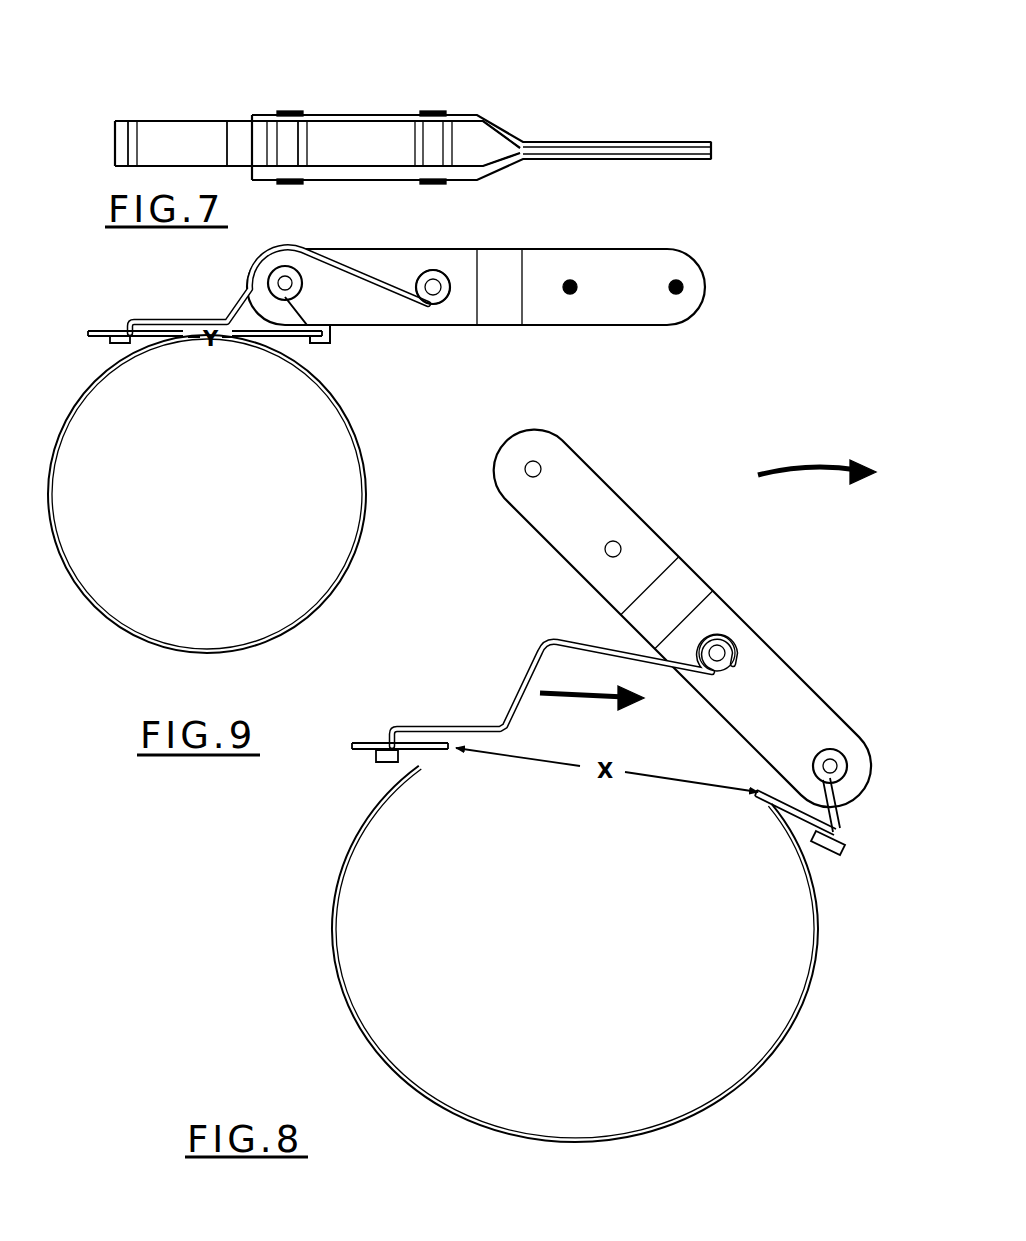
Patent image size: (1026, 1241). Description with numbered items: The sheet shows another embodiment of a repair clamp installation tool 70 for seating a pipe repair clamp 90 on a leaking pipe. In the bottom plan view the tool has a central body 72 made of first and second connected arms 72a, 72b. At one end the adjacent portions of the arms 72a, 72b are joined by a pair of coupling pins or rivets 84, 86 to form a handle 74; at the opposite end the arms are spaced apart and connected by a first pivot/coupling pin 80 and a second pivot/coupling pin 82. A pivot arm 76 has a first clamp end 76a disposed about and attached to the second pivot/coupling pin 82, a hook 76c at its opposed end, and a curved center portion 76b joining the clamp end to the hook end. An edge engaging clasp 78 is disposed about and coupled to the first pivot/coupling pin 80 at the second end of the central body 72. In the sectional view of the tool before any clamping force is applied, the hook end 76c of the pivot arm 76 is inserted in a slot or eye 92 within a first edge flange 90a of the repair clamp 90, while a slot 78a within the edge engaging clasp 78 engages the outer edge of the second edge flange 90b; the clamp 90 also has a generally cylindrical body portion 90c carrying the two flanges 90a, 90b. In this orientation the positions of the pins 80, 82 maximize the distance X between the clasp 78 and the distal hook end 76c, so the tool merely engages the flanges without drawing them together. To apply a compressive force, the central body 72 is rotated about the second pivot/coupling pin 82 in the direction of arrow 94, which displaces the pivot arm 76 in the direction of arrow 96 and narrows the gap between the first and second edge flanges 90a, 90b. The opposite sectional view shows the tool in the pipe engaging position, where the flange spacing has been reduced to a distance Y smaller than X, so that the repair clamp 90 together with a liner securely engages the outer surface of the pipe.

In FIG. 7, the repair clamp installation tool 70 is at (304, 84).
In FIG. 9, the repair clamp installation tool 70 is at (636, 336).
In FIG. 8, the repair clamp installation tool 70 is at (742, 560).
In FIG. 7, the central body 72 is at (404, 112).
In FIG. 9, the central body 72 is at (470, 328).
In FIG. 8, the central body 72 is at (826, 700).
In FIG. 7, the first arm 72a is at (386, 116).
In FIG. 9, the first arm 72a is at (418, 262).
In FIG. 7, the second arm 72b is at (380, 180).
In FIG. 8, the second arm 72b is at (796, 681).
In FIG. 7, the handle 74 is at (625, 142).
In FIG. 9, the handle 74 is at (640, 272).
In FIG. 8, the handle 74 is at (590, 486).
In FIG. 7, the pivot arm 76 is at (170, 118).
In FIG. 9, the pivot arm 76 is at (232, 300).
In FIG. 8, the pivot arm 76 is at (500, 676).
In FIG. 7, the first clamp end 76a is at (458, 147).
In FIG. 9, the first clamp end 76a is at (440, 274).
In FIG. 8, the first clamp end 76a is at (740, 640).
In FIG. 7, the curved center portion 76b is at (240, 136).
In FIG. 8, the curved center portion 76b is at (545, 634).
In FIG. 7, the hook 76c is at (118, 141).
In FIG. 8, the hook 76c is at (384, 757).
In FIG. 7, the edge engaging clasp 78 is at (303, 142).
In FIG. 9, the edge engaging clasp 78 is at (334, 332).
In FIG. 8, the edge engaging clasp 78 is at (843, 848).
In FIG. 8, the slot 78a is at (838, 856).
In FIG. 7, the first pivot/coupling pin 80 is at (288, 111).
In FIG. 9, the first pivot/coupling pin 80 is at (285, 276).
In FIG. 8, the first pivot/coupling pin 80 is at (834, 758).
In FIG. 7, the second pivot/coupling pin 82 is at (436, 112).
In FIG. 9, the second pivot/coupling pin 82 is at (446, 300).
In FIG. 8, the second pivot/coupling pin 82 is at (717, 645).
In FIG. 9, the coupling pin 84 is at (571, 279).
In FIG. 8, the coupling pin 84 is at (622, 544).
In FIG. 9, the coupling pin 86 is at (684, 282).
In FIG. 8, the coupling pin 86 is at (524, 468).
In FIG. 9, the pipe repair clamp 90 is at (105, 628).
In FIG. 8, the pipe repair clamp 90 is at (336, 978).
In FIG. 9, the first edge flange 90a is at (88, 339).
In FIG. 8, the first edge flange 90a is at (420, 752).
In FIG. 9, the second edge flange 90b is at (288, 340).
In FIG. 8, the second edge flange 90b is at (780, 804).
In FIG. 9, the cylindrical body portion 90c is at (318, 612).
In FIG. 8, the cylindrical body portion 90c is at (455, 1104).
In FIG. 9, the slot 92 is at (118, 332).
In FIG. 8, the slot 92 is at (386, 750).
In FIG. 8, the arrow 94 is at (806, 460).
In FIG. 8, the arrow 96 is at (574, 702).